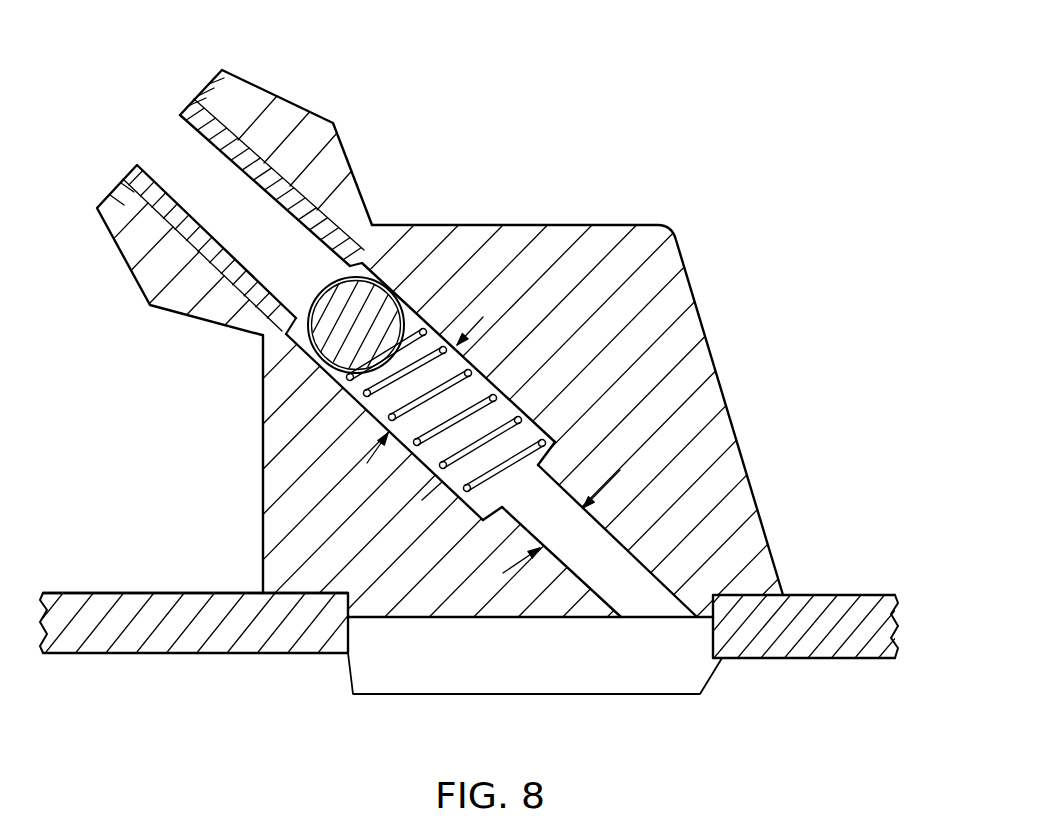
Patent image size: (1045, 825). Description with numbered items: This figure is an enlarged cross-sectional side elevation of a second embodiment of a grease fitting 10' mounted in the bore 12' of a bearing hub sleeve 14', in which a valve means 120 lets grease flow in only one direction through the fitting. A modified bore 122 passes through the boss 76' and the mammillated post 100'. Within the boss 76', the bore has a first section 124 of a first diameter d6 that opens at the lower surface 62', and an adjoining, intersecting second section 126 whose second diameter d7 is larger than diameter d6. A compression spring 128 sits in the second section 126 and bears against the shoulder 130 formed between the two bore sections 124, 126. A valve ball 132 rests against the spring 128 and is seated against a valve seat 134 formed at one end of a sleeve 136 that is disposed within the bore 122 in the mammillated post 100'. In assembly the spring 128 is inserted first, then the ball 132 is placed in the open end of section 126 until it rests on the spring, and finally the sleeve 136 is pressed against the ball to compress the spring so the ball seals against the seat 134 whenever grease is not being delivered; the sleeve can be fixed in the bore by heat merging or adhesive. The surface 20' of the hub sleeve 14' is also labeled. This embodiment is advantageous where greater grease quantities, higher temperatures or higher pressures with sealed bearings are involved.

The grease fitting 10' is at (721, 146).
The bore 12' is at (205, 645).
The bearing hub sleeve 14' is at (486, 592).
The plate upper surface 20' is at (195, 559).
The lower surface 62' is at (535, 677).
The boss 76' is at (522, 421).
The mammillated post 100' is at (251, 200).
The valve means 120 is at (300, 403).
The modified bore 122 is at (525, 412).
The first section 124 is at (617, 542).
The second section 126 is at (505, 393).
The compression spring 128 is at (413, 503).
The shoulder 130 is at (548, 456).
The valve ball 132 is at (375, 293).
The valve seat 134 is at (343, 270).
The sleeve 136 is at (212, 127).
The first diameter d6 is at (575, 512).
The second diameter d7 is at (414, 409).